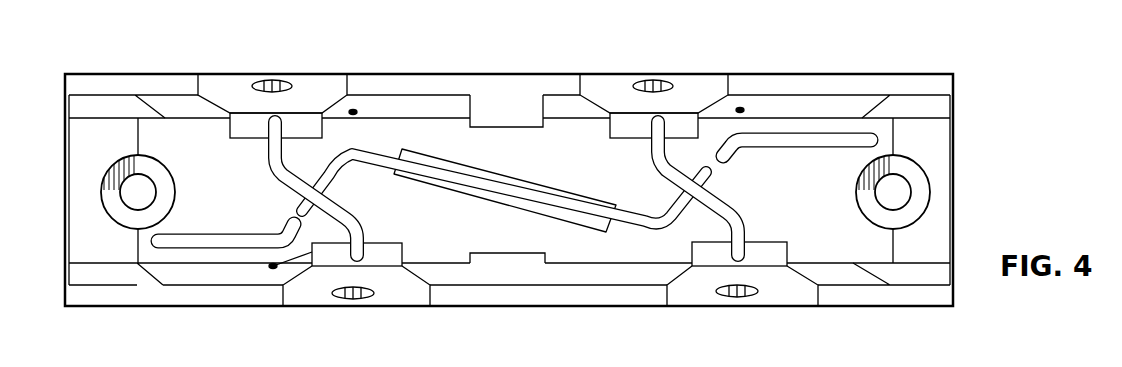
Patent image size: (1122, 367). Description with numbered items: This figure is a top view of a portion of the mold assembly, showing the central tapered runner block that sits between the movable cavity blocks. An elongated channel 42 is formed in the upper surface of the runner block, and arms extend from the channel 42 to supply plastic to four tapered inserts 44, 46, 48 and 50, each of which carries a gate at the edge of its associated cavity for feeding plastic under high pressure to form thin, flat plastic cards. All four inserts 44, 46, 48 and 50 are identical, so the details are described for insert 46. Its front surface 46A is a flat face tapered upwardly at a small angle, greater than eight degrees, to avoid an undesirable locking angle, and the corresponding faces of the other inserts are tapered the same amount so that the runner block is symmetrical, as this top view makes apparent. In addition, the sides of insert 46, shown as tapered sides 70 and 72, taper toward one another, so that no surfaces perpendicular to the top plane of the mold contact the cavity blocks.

The elongated channel 42 is at (472, 177).
The tapered insert 44 is at (272, 266).
The tapered insert 46 is at (741, 304).
The front surface 46A is at (697, 290).
The tapered insert 48 is at (247, 127).
The tapered insert 50 is at (687, 127).
The tapered side 70 is at (670, 282).
The tapered side 72 is at (820, 287).